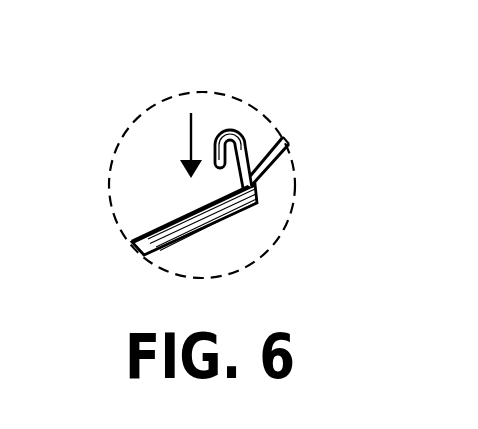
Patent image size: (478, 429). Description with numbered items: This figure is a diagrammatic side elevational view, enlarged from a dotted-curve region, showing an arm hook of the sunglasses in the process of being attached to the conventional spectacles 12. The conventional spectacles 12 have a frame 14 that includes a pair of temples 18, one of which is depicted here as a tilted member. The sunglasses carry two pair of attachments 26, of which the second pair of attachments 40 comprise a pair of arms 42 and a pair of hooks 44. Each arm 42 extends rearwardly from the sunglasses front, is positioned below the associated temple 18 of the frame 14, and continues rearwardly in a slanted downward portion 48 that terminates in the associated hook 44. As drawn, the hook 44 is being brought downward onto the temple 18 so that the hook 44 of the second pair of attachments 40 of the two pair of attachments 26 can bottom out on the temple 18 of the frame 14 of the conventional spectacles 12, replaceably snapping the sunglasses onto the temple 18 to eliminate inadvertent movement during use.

The conventional spectacles 12 is at (137, 212).
The frame 14 is at (288, 169).
The temple 18 is at (177, 221).
The two pair of attachments 26 is at (226, 241).
The second pair of attachments 40 is at (226, 241).
The arm 42 is at (185, 258).
The hook 44 is at (238, 107).
The slanted downward portion 48 is at (238, 212).